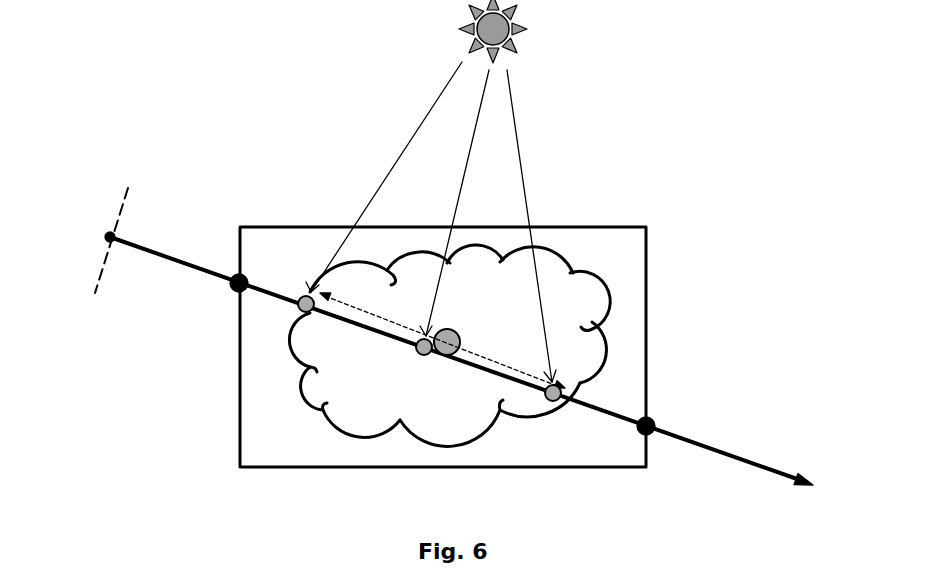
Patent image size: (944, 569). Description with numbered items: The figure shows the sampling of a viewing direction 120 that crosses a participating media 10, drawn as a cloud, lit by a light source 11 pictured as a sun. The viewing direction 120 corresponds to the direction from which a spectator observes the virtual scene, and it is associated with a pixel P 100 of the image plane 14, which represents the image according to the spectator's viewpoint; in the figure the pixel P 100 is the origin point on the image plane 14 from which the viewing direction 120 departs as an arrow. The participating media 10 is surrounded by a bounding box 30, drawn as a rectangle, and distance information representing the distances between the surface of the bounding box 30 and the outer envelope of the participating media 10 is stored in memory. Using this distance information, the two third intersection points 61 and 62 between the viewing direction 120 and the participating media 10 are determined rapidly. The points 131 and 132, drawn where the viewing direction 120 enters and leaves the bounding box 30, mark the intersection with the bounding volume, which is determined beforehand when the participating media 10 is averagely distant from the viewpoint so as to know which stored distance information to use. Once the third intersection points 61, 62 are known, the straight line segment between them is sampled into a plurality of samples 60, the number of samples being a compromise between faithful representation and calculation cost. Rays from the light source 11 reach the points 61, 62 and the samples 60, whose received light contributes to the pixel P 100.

The participating media 10 is at (310, 382).
The light source 11 is at (477, 27).
The image plane 14 is at (120, 210).
The bounding box 30 is at (600, 210).
The samples 60 is at (450, 340).
The third intersection point 61 is at (300, 293).
The third intersection point 62 is at (560, 407).
The pixel P 100 is at (107, 242).
The viewing direction 120 is at (743, 457).
The entry point 131 is at (233, 297).
The exit point 132 is at (657, 418).